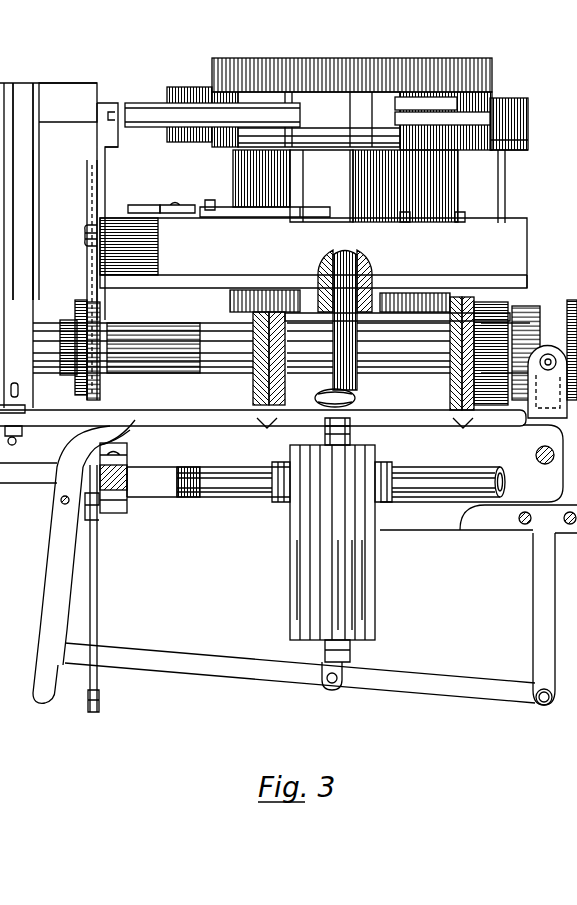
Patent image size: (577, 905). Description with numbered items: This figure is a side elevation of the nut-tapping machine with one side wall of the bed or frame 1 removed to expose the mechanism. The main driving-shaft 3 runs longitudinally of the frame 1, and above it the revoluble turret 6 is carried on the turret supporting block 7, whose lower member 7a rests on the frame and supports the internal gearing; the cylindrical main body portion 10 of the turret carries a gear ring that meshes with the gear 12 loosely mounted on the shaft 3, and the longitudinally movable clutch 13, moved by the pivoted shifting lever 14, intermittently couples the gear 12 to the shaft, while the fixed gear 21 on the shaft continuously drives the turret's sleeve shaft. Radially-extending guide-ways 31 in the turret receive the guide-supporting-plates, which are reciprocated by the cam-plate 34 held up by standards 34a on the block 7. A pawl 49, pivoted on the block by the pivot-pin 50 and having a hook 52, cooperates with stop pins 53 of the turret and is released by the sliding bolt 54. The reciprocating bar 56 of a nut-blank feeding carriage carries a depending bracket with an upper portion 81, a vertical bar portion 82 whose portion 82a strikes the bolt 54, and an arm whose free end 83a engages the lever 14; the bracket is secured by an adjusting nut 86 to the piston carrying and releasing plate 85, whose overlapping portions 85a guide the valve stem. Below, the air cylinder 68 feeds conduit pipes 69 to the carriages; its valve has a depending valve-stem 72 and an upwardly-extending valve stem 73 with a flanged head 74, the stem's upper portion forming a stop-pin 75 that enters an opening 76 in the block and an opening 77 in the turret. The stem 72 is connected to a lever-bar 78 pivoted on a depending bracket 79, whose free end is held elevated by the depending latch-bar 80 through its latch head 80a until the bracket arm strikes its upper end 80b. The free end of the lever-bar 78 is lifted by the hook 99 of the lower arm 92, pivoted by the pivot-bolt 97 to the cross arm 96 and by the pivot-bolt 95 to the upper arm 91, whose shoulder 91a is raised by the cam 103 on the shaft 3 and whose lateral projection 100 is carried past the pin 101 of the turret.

The bed or frame 1 is at (474, 463).
The main driving-shaft 3 is at (152, 373).
The revoluble turret 6 is at (188, 92).
The turret supporting-frame or block 7 is at (527, 245).
The lower member of turret block 7a is at (518, 285).
The cylindrical main body portion of turret 10 is at (235, 170).
The gear 12 is at (450, 388).
The longitudinally movable clutch 13 is at (570, 325).
The shifting lever 14 is at (180, 455).
The fixed gear 21 is at (235, 312).
The radially-extending guide-ways 31 is at (528, 118).
The cam-plate 34 is at (510, 150).
The standards 34a is at (507, 198).
The pawl 49 is at (233, 212).
The pivot-pin 50 is at (178, 205).
The hook 52 is at (300, 212).
The stop pins 53 is at (213, 205).
The sliding bolt 54 is at (145, 205).
The horizontal reciprocating bar 56 is at (53, 95).
The air cylinder 68 is at (300, 530).
The air or fluid conduit pipes 69 is at (222, 485).
The depending valve-stem 72 is at (348, 650).
The upwardly-extending valve stem 73 is at (350, 435).
The flanged head 74 is at (318, 397).
The stop-pin 75 is at (355, 318).
The opening in turret block 76 is at (375, 285).
The opening in turret 77 is at (360, 265).
The lever-bar 78 is at (215, 672).
The depending bracket 79 is at (533, 588).
The depending latch-bar 80 is at (50, 595).
The latch head 80a is at (55, 660).
The upper end of latch member 80b is at (135, 425).
The upper bracket portion 81 is at (27, 70).
The vertically-extending bar portion 82 is at (27, 263).
The portion of vertical bar 82a is at (32, 205).
The free end of arm 83a is at (25, 431).
The piston carrying and releasing plate 85 is at (120, 410).
The overlapping portions of plates 85a is at (252, 402).
The adjusting nut 86 is at (16, 442).
The upper arm 91 is at (97, 177).
The projecting shoulder portion 91a is at (97, 345).
The lower arm 92 is at (97, 586).
The pivot-bolt 95 is at (85, 236).
The cross arm 96 is at (127, 481).
The pivot-bolt 97 is at (98, 510).
The hook or bracket portion 99 is at (100, 702).
The lateral projection 100 is at (117, 147).
The pin 101 is at (120, 112).
The cam 103 is at (78, 365).